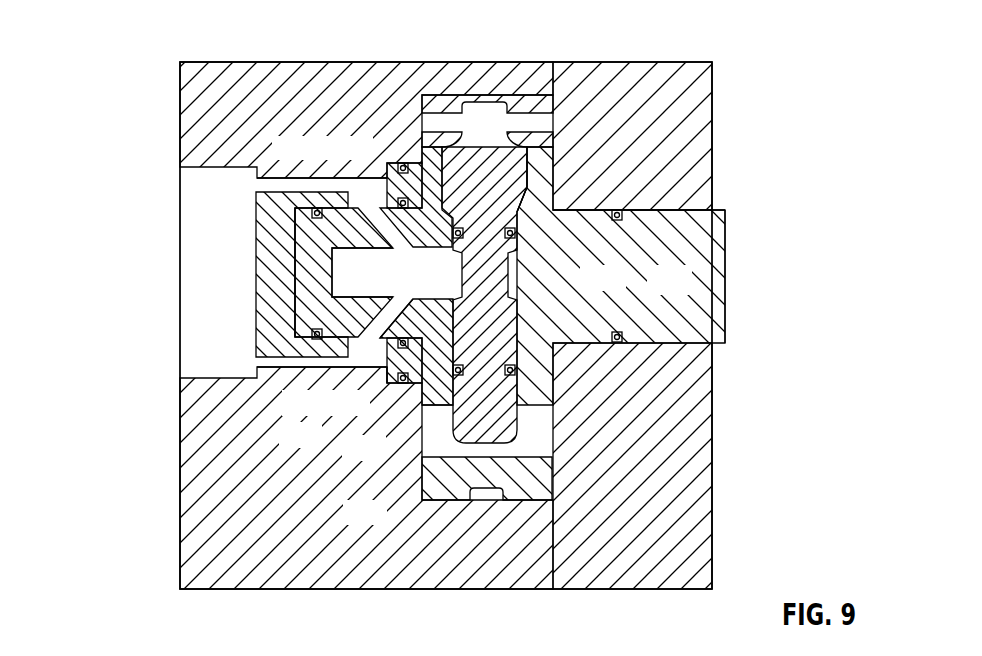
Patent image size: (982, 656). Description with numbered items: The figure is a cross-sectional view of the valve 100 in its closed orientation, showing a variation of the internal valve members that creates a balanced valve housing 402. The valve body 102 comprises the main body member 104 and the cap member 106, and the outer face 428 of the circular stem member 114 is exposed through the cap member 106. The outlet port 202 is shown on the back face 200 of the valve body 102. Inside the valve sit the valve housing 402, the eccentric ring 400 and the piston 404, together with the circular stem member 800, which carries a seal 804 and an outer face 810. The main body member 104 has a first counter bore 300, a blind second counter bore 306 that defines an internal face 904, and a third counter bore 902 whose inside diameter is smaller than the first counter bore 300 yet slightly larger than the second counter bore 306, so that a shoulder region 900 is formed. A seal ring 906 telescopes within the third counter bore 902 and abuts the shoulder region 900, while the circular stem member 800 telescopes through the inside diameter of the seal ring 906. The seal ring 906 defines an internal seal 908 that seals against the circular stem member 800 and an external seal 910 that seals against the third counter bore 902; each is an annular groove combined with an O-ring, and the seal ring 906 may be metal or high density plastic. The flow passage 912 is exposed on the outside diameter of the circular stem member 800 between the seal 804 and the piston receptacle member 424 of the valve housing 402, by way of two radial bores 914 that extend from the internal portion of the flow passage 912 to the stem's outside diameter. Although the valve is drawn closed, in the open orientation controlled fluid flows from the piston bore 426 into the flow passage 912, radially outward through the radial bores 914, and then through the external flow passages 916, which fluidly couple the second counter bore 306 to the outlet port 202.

The valve 100 is at (235, 47).
The valve body 102 is at (572, 44).
The main body member 104 is at (468, 62).
The cap member 106 is at (665, 70).
The circular stem member 114 is at (738, 314).
The back face 200 is at (180, 100).
The outlet port 202 is at (198, 368).
The first counter bore 300 is at (420, 498).
The second counter bore 306 is at (380, 388).
The eccentric ring 400 is at (518, 490).
The valve housing 402 is at (688, 292).
The piston 404 is at (520, 183).
The piston receptacle member 424 is at (433, 415).
The piston bore 426 is at (516, 300).
The outer face 428 is at (727, 220).
The circular stem member 800 is at (300, 266).
The seal 804 is at (317, 202).
The outer face 810 is at (312, 220).
The shoulder region 900 is at (405, 392).
The third counter bore 902 is at (392, 385).
The internal face 904 is at (300, 292).
The seal ring 906 is at (400, 158).
The internal seal 908 is at (421, 247).
The external seal 910 is at (393, 178).
The flow passage 912 is at (380, 287).
The radial bores 914 is at (380, 212).
The external flow passages 916 is at (252, 184).